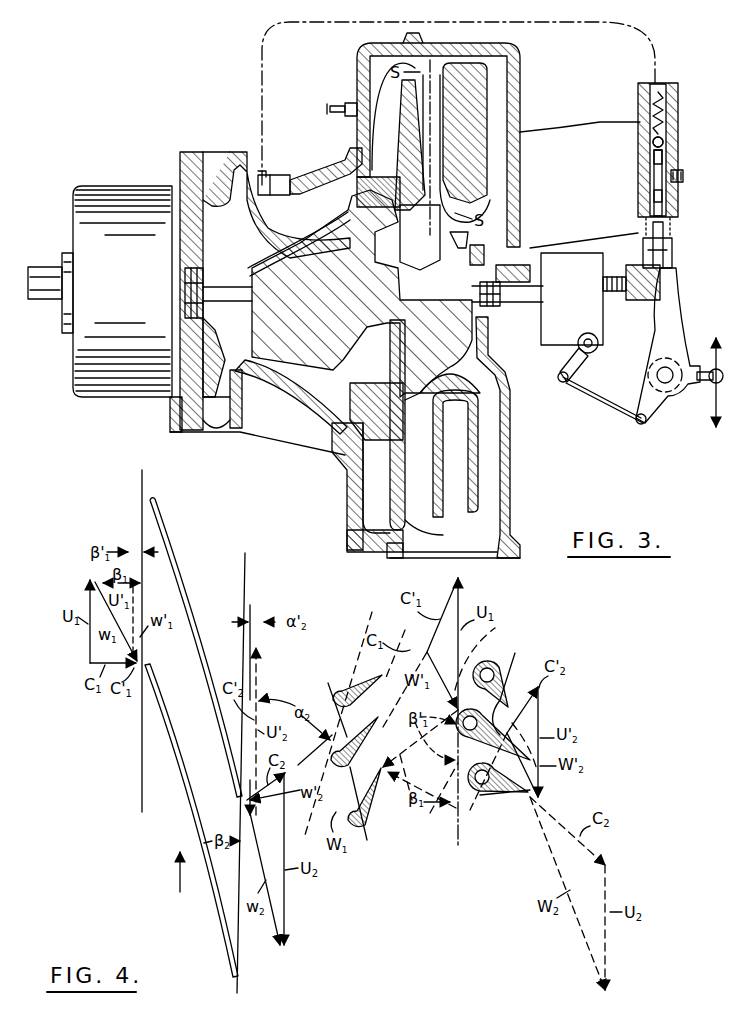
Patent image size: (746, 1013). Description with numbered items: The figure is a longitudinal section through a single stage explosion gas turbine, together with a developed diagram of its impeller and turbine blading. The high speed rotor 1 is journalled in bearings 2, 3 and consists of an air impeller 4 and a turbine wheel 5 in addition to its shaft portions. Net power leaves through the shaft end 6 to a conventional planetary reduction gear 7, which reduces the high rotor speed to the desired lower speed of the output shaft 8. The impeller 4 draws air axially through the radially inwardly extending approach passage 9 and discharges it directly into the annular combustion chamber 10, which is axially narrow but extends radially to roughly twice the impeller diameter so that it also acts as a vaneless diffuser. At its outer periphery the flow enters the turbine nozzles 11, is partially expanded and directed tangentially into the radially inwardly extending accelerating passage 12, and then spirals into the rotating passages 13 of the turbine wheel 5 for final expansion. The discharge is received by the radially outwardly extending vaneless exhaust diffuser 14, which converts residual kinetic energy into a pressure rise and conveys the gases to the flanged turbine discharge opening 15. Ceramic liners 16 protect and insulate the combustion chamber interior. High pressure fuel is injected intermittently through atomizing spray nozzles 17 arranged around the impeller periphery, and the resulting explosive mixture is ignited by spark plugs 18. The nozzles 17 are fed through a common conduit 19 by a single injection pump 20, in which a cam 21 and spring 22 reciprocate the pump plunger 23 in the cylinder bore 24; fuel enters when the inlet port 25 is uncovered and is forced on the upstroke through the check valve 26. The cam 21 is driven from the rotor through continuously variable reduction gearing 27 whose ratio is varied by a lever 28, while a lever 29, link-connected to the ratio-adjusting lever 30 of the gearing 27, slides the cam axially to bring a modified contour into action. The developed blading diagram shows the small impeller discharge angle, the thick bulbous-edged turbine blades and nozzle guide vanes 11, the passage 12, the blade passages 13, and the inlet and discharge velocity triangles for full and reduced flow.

In FIG. 3, the high speed rotor 1 is at (340, 250).
In FIG. 3, the bearing 2 is at (204, 326).
In FIG. 3, the bearing 3 is at (507, 265).
In FIG. 3, the air impeller 4 is at (268, 232).
In FIG. 3, the turbine wheel 5 is at (418, 262).
In FIG. 3, the shaft end 6 is at (195, 266).
In FIG. 3, the reduction gear 7 is at (117, 195).
In FIG. 3, the output shaft 8 is at (46, 300).
In FIG. 3, the approach passage 9 is at (216, 226).
In FIG. 3, the annular combustion chamber 10 is at (352, 136).
In FIG. 3, the turbine nozzles 11 is at (452, 98).
In FIG. 4, the turbine nozzles 11 is at (340, 690).
In FIG. 3, the accelerating passage 12 is at (465, 148).
In FIG. 4, the accelerating passage 12 is at (442, 822).
In FIG. 3, the rotating passages 13 is at (463, 210).
In FIG. 4, the rotating passages 13 is at (502, 672).
In FIG. 3, the vaneless exhaust diffuser 14 is at (490, 440).
In FIG. 3, the flanged turbine discharge opening 15 is at (475, 552).
In FIG. 3, the ceramic liners 16 is at (396, 482).
In FIG. 3, the atomizing spray nozzles 17 is at (272, 175).
In FIG. 3, the spark plugs 18 is at (346, 103).
In FIG. 3, the common conduit 19 is at (262, 70).
In FIG. 3, the injection pump 20 is at (683, 124).
In FIG. 3, the cam 21 is at (665, 284).
In FIG. 3, the spring 22 is at (664, 222).
In FIG. 3, the pump plunger 23 is at (657, 198).
In FIG. 3, the cylinder bore 24 is at (669, 160).
In FIG. 3, the inlet port 25 is at (684, 180).
In FIG. 3, the check valve 26 is at (667, 141).
In FIG. 3, the continuously variable reduction gearing 27 is at (550, 330).
In FIG. 3, the lever 28 is at (616, 303).
In FIG. 3, the lever 29 is at (668, 335).
In FIG. 3, the ratio-adjusting lever 30 is at (576, 356).